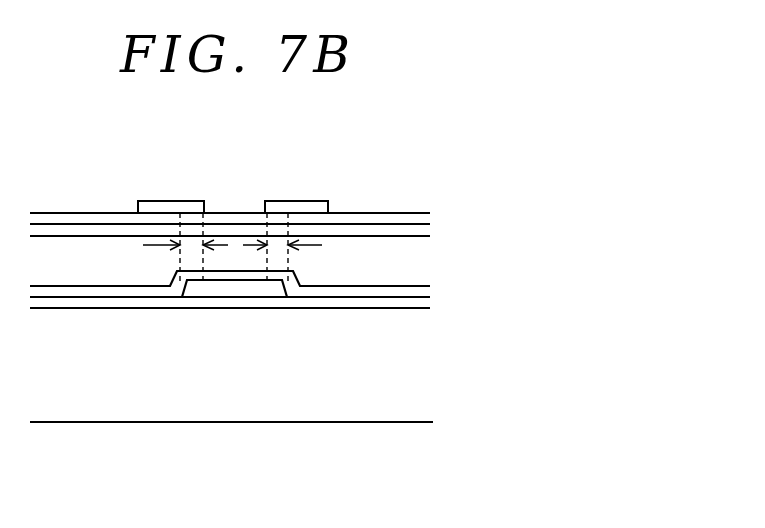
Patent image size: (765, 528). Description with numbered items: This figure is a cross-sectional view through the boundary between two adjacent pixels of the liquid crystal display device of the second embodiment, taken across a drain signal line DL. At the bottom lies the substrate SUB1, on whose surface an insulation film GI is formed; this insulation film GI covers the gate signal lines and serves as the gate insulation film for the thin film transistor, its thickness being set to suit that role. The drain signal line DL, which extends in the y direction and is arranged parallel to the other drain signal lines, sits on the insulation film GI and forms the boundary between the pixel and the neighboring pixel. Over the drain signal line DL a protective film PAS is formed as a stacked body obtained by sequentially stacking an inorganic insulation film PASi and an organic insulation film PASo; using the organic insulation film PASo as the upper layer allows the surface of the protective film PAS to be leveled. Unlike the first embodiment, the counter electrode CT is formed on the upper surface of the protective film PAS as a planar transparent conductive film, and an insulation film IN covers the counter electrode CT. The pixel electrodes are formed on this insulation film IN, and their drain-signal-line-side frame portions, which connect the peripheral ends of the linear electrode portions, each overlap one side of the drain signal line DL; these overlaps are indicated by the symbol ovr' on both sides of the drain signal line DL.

The counter electrode CT is at (97, 213).
The insulation film IN is at (418, 214).
The organic insulation film PASo is at (398, 253).
The inorganic insulation film PASi is at (418, 292).
The protective film PAS is at (553, 227).
The drain signal line DL is at (243, 290).
The insulation film GI is at (365, 303).
The substrate SUB1 is at (115, 402).
The overlap ovr' is at (235, 248).